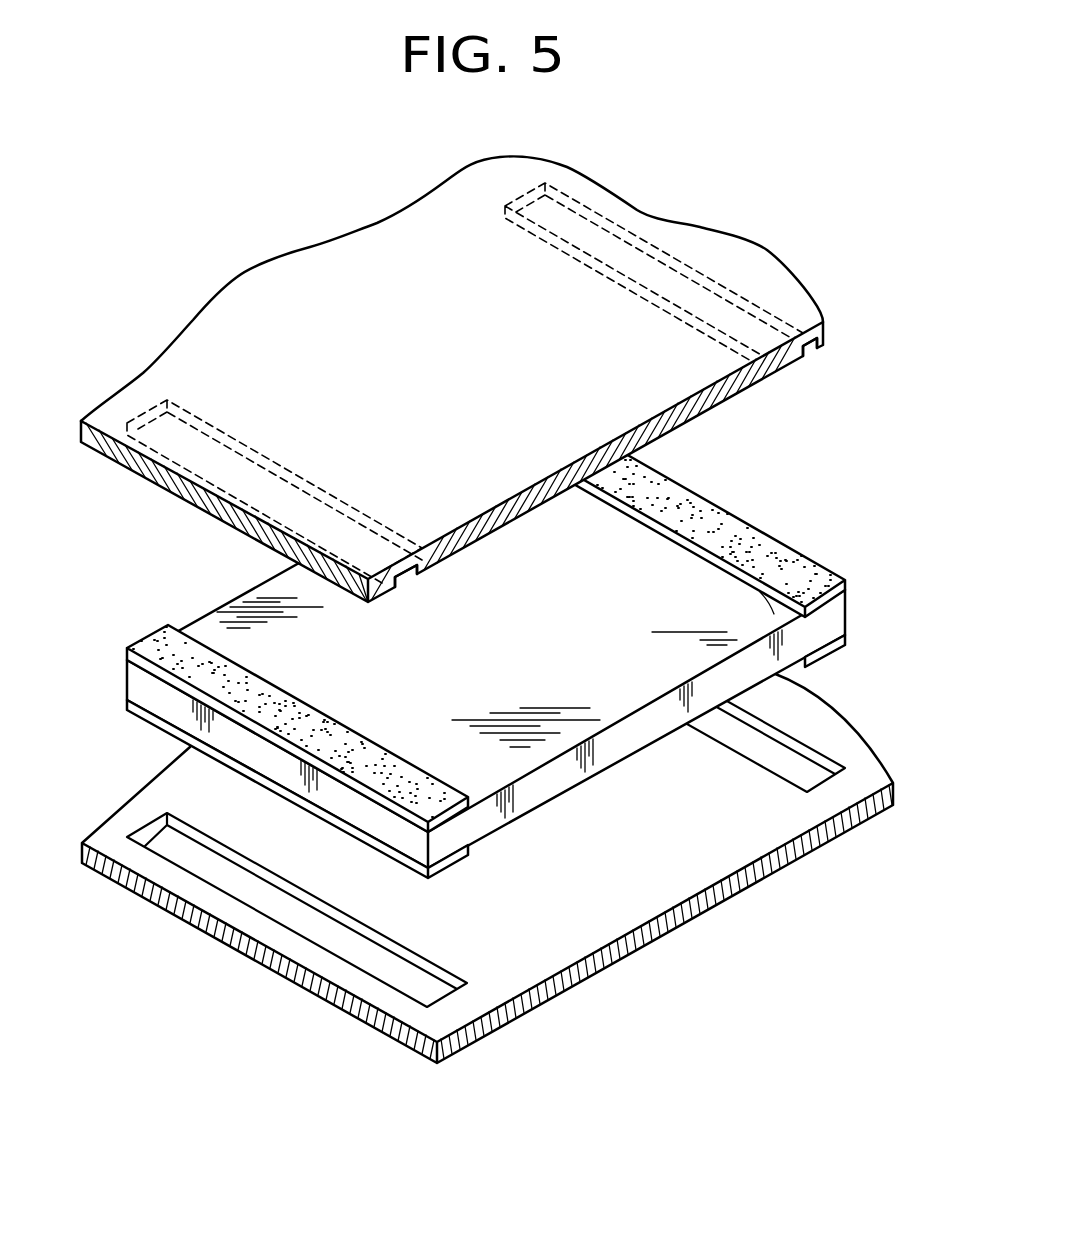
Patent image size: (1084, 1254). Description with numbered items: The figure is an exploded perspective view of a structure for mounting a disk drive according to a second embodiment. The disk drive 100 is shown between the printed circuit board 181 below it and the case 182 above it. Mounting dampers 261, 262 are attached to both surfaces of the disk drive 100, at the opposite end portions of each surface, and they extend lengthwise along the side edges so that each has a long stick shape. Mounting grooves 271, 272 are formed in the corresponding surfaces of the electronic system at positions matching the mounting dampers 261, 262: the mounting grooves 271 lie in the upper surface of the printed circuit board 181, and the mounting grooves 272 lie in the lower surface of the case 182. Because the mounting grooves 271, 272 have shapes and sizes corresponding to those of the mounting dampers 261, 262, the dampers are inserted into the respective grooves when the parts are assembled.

The disk drive 100 is at (854, 603).
The printed circuit board 181 is at (660, 937).
The case 182 is at (537, 510).
The mounting damper 261 is at (467, 858).
The mounting damper 262 is at (383, 753).
The mounting groove 271 is at (433, 982).
The mounting groove 272 is at (418, 572).